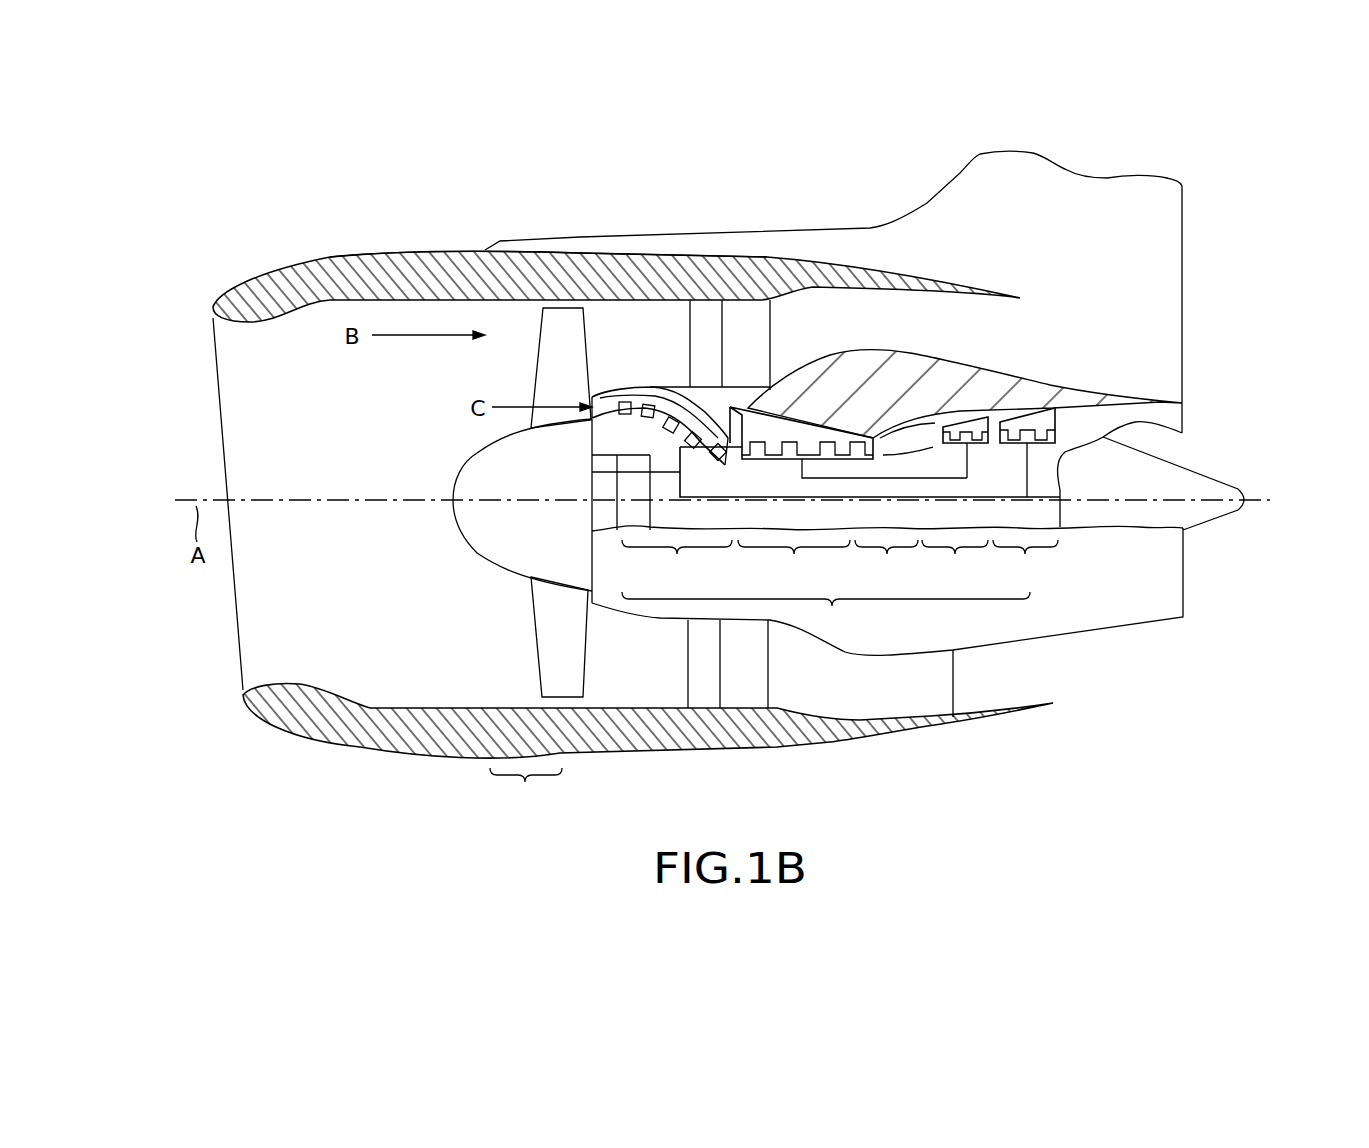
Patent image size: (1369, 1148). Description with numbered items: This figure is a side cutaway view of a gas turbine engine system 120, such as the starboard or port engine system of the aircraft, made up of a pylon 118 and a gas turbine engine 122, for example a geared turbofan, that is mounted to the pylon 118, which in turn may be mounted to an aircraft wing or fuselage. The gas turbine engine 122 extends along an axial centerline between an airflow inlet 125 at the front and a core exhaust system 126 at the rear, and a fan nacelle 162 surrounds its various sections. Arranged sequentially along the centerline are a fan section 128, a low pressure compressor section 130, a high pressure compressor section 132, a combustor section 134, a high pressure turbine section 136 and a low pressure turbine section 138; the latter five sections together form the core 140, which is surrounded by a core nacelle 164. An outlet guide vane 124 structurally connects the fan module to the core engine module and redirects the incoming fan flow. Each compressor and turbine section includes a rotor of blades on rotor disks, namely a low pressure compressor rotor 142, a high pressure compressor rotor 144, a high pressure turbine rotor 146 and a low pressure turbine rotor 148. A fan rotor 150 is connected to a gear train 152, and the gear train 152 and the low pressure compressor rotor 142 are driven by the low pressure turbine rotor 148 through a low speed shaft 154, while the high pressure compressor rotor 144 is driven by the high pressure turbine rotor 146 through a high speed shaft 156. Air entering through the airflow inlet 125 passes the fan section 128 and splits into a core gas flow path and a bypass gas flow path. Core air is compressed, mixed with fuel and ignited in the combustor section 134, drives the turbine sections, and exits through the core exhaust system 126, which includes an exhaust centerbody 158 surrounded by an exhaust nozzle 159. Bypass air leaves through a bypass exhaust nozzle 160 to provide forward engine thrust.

The pylon 118 is at (1063, 192).
The gas turbine engine system 120 is at (170, 205).
The gas turbine engine 122 is at (320, 250).
The outlet guide vane 124 is at (768, 328).
The airflow inlet 125 is at (233, 616).
The core exhaust system 126 is at (1225, 440).
The fan section 128 is at (526, 787).
The low pressure compressor section 130 is at (677, 564).
The high pressure compressor section 132 is at (794, 564).
The combustor section 134 is at (886, 564).
The high pressure turbine section 136 is at (955, 564).
The low pressure turbine section 138 is at (1025, 564).
The core 140 is at (826, 615).
The low pressure compressor rotor 142 is at (662, 423).
The high pressure compressor rotor 144 is at (763, 432).
The high pressure turbine rotor 146 is at (957, 430).
The low pressure turbine rotor 148 is at (1012, 430).
The fan rotor 150 is at (528, 575).
The gear train 152 is at (620, 462).
The low speed shaft 154 is at (1060, 497).
The high speed shaft 156 is at (802, 474).
The exhaust centerbody 158 is at (1222, 483).
The exhaust nozzle 159 is at (1183, 404).
The bypass exhaust nozzle 160 is at (1065, 302).
The fan nacelle 162 is at (381, 255).
The core nacelle 164 is at (865, 360).